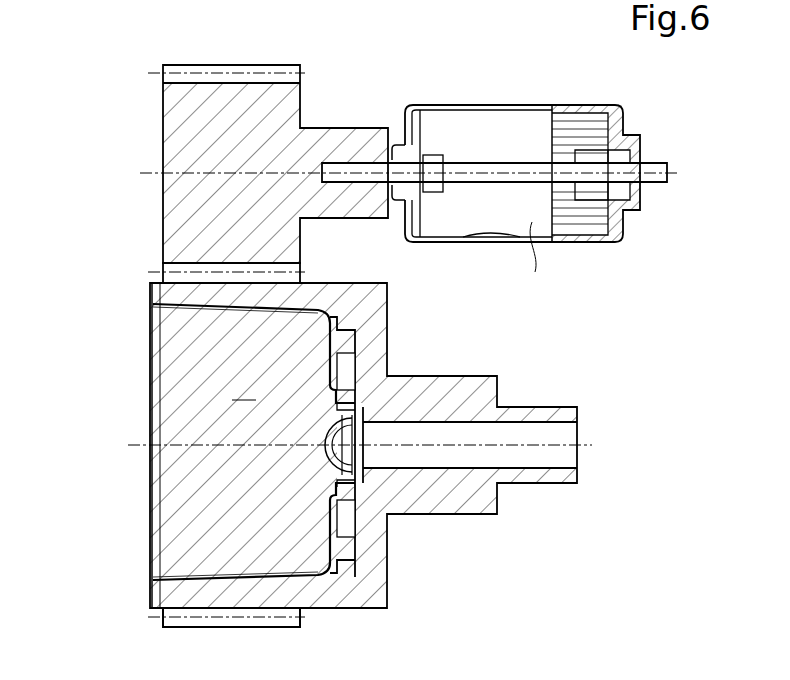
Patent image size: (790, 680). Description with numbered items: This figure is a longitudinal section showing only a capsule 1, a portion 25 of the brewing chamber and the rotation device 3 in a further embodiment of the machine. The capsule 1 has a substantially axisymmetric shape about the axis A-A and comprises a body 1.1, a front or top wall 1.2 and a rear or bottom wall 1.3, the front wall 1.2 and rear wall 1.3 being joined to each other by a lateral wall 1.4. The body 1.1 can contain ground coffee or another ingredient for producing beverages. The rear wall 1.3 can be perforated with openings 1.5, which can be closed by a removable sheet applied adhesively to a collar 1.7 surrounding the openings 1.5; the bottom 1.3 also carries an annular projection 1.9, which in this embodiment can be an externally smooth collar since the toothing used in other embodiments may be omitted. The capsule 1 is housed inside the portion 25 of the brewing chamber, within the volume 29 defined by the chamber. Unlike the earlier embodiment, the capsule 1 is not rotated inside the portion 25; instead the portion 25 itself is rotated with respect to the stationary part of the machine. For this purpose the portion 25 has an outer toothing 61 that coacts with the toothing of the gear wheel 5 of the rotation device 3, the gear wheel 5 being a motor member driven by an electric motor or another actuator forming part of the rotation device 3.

The capsule 1 is at (119, 418).
The body 1.1 is at (202, 374).
The front wall 1.2 is at (151, 544).
The rear wall 1.3 is at (348, 520).
The lateral wall 1.4 is at (262, 585).
The perforations 1.5 is at (345, 475).
The collar 1.7 is at (352, 398).
The annular projection 1.9 is at (348, 343).
The rotation device 3 is at (388, 68).
The gear wheel 5 is at (207, 110).
The portion of the brewing chamber 25 is at (335, 598).
The volume 29 is at (242, 318).
The outer toothing 61 is at (205, 622).